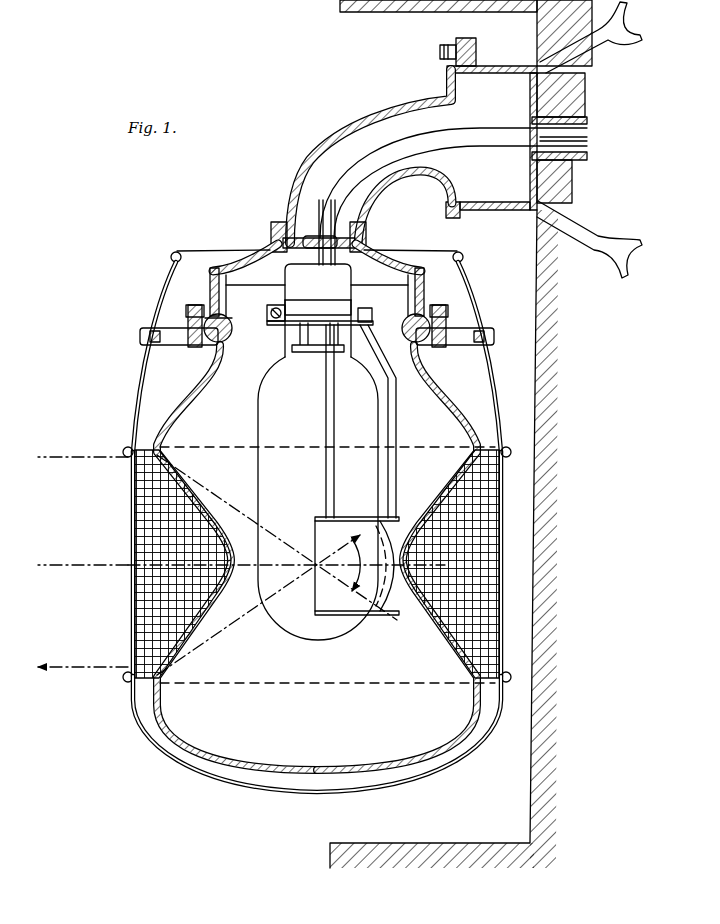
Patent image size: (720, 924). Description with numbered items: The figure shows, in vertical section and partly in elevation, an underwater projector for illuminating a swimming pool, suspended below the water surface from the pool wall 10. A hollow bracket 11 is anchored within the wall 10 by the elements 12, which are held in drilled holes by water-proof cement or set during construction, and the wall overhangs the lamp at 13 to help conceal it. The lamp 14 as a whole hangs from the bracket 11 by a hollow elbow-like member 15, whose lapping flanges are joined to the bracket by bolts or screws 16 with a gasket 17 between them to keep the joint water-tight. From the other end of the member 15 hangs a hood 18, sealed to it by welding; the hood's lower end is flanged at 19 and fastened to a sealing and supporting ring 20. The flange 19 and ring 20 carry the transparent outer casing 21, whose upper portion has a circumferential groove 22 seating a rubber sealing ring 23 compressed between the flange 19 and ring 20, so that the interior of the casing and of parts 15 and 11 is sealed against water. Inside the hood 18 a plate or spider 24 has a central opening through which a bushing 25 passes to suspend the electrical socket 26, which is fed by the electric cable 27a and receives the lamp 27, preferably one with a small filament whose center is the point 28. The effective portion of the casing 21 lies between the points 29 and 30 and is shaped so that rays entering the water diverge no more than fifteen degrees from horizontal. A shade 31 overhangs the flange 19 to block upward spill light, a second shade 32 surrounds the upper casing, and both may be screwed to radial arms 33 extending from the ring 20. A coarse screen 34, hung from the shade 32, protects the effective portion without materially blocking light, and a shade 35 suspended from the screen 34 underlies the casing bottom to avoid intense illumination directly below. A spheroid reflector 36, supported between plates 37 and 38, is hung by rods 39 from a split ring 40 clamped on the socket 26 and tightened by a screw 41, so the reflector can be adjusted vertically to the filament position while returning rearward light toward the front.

The wall 10 is at (548, 376).
The bracket 11 is at (492, 72).
The anchoring elements 12 is at (588, 38).
The wall overhang 13 is at (397, 2).
The lamp 14 is at (146, 395).
The elbow-like member 15 is at (356, 118).
The bolts or screws 16 is at (440, 52).
The gasket 17 is at (458, 36).
The hood 18 is at (240, 262).
The flange 19 is at (186, 318).
The sealing and supporting ring 20 is at (199, 348).
The outer casing 21 is at (200, 398).
The circumferential groove 22 is at (230, 318).
The sealing ring 23 is at (230, 342).
The plate or spider 24 is at (340, 242).
The bushing 25 is at (306, 236).
The socket member 26 is at (355, 282).
The lamp 27 is at (258, 470).
The electric cable 27a is at (400, 135).
The filament center 28 is at (312, 560).
The upper limit point of effective casing portion 29 is at (170, 462).
The lower limit point of effective casing portion 30 is at (168, 670).
The shade 31 is at (160, 282).
The second shade 32 is at (130, 419).
The radial arms 33 is at (172, 346).
The screen 34 is at (132, 517).
The shade 35 is at (276, 793).
The reflector 36 is at (400, 598).
The plate 37 is at (370, 517).
The plate 38 is at (366, 616).
The rods 39 is at (335, 449).
The split ring 40 is at (320, 298).
The screw 41 is at (272, 322).